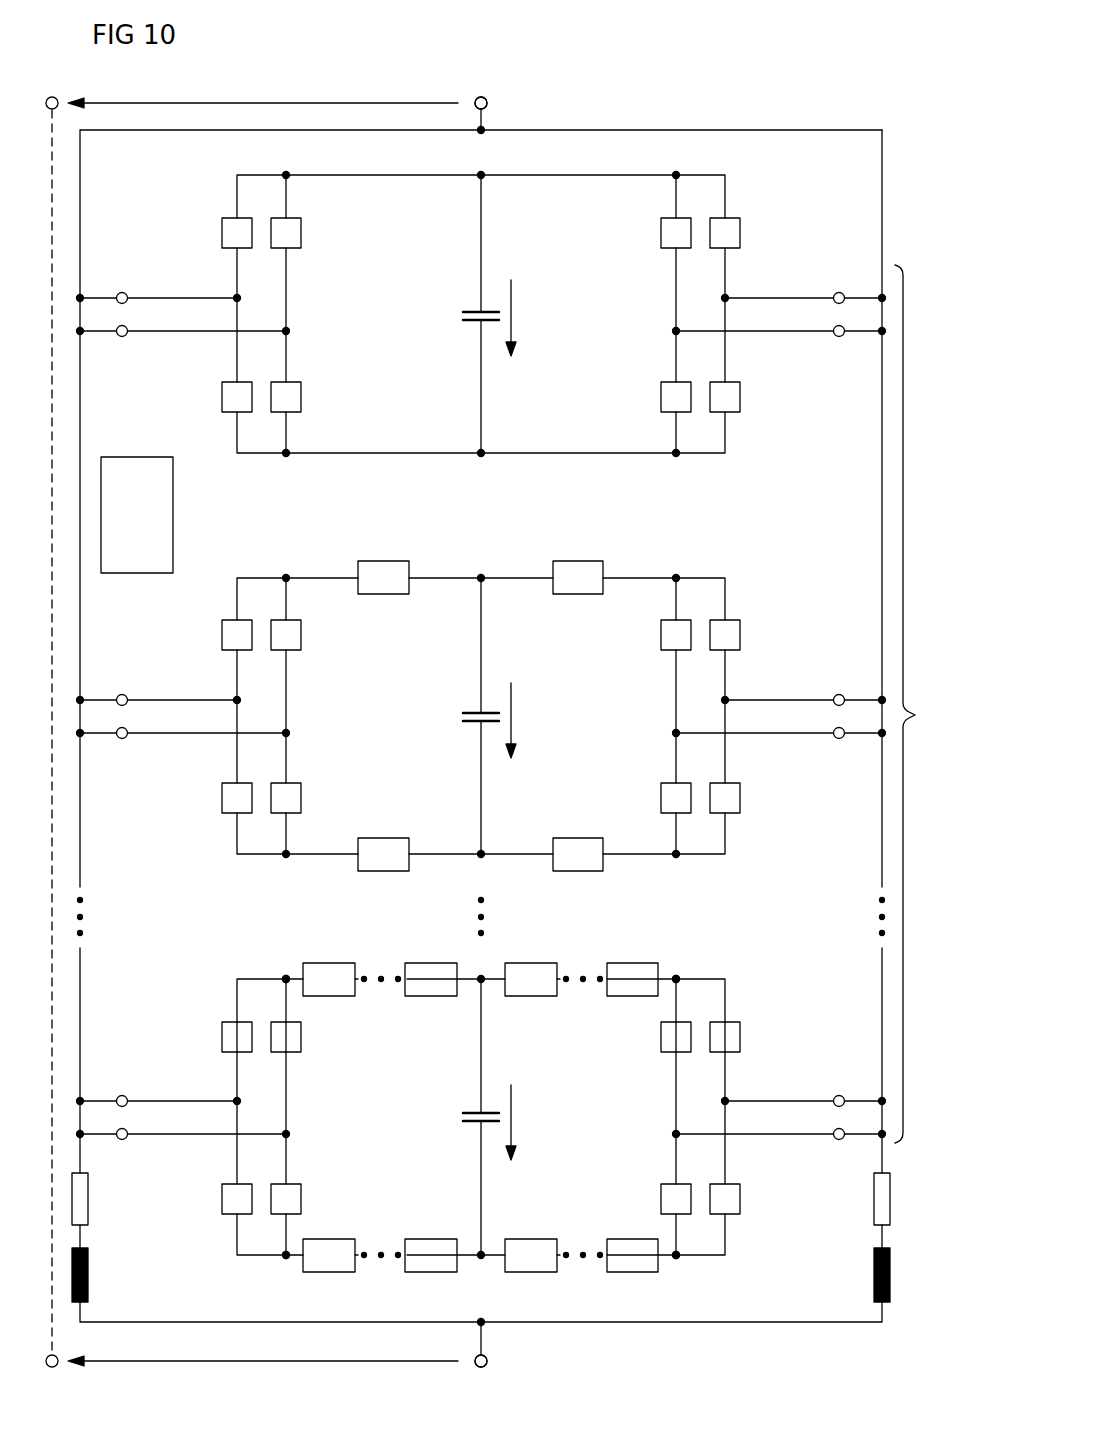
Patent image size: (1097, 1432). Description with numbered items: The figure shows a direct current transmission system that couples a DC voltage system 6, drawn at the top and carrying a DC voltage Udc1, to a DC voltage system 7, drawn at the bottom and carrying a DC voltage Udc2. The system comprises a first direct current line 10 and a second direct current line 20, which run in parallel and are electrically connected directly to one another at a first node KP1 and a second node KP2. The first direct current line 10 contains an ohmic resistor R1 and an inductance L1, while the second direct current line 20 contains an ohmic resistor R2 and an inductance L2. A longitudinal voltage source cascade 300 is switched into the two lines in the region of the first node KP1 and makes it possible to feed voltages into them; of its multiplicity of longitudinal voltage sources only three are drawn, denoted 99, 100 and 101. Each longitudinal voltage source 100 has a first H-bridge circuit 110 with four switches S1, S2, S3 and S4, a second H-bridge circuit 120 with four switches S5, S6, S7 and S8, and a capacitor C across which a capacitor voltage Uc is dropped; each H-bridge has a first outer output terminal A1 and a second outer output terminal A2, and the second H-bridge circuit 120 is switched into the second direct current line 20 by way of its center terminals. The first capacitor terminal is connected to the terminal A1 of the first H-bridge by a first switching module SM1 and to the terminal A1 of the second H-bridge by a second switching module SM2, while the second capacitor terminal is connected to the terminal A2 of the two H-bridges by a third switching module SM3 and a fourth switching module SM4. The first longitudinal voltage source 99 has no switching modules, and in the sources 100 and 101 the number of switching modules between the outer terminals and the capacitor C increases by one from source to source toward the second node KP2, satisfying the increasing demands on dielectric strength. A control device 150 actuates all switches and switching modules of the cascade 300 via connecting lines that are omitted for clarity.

The DC voltage system 6 is at (501, 81).
The DC voltage system 7 is at (487, 1361).
The first direct current line 10 is at (80, 212).
The second direct current line 20 is at (882, 212).
The first node KP1 is at (481, 130).
The second node KP2 is at (481, 1322).
The DC voltage Udc1 is at (263, 89).
The DC voltage Udc2 is at (263, 1348).
The capacitor voltage Uc is at (527, 720).
The capacitor C is at (473, 1110).
The switch S1 is at (222, 233).
The switch S2 is at (301, 233).
The switch S3 is at (222, 397).
The switch S4 is at (301, 397).
The switch S5 is at (661, 233).
The switch S6 is at (740, 233).
The switch S7 is at (661, 397).
The switch S8 is at (740, 397).
The first switching module SM1 is at (383, 561).
The second switching module SM2 is at (564, 561).
The third switching module SM3 is at (392, 838).
The fourth switching module SM4 is at (562, 838).
The first outer output terminal A1 is at (286, 979).
The second outer output terminal A2 is at (286, 1255).
The first longitudinal voltage source 99 is at (750, 447).
The longitudinal voltage source 100 is at (750, 850).
The longitudinal voltage source 101 is at (750, 1250).
The first H-bridge circuit 110 is at (307, 1113).
The second H-bridge circuit 120 is at (658, 1113).
The control device 150 is at (173, 512).
The longitudinal voltage source cascade 300 is at (932, 704).
The ohmic resistor R1 is at (88, 1197).
The ohmic resistor R2 is at (890, 1197).
The inductance L1 is at (88, 1276).
The inductance L2 is at (890, 1276).